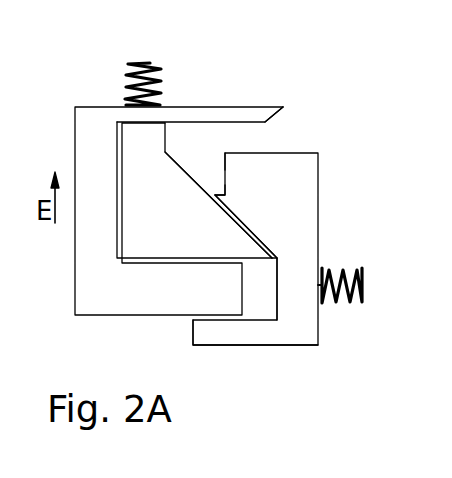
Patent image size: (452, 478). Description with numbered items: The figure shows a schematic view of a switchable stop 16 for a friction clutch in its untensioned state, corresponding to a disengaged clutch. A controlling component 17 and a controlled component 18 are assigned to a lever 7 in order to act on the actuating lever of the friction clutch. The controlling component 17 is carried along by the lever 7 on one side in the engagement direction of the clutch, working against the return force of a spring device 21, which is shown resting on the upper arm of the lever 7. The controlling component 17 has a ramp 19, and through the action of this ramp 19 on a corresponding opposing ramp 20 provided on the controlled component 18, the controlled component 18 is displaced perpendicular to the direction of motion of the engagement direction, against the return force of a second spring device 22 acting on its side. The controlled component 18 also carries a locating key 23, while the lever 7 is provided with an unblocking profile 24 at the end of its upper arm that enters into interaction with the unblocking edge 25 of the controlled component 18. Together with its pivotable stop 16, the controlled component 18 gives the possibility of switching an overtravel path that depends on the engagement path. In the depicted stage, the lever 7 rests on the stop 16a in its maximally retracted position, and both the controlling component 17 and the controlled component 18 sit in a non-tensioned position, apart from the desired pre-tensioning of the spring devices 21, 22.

The switchable stop 16 is at (360, 65).
The stop 16a is at (219, 330).
The lever 7 is at (105, 209).
The controlling component 17 is at (182, 234).
The controlled component 18 is at (288, 211).
The ramp 19 is at (181, 164).
The opposing ramp 20 is at (233, 221).
The spring device 21 is at (153, 62).
The spring device 22 is at (366, 277).
The locating key 23 is at (225, 195).
The unblocking profile 24 is at (283, 107).
The unblocking edge 25 is at (225, 158).